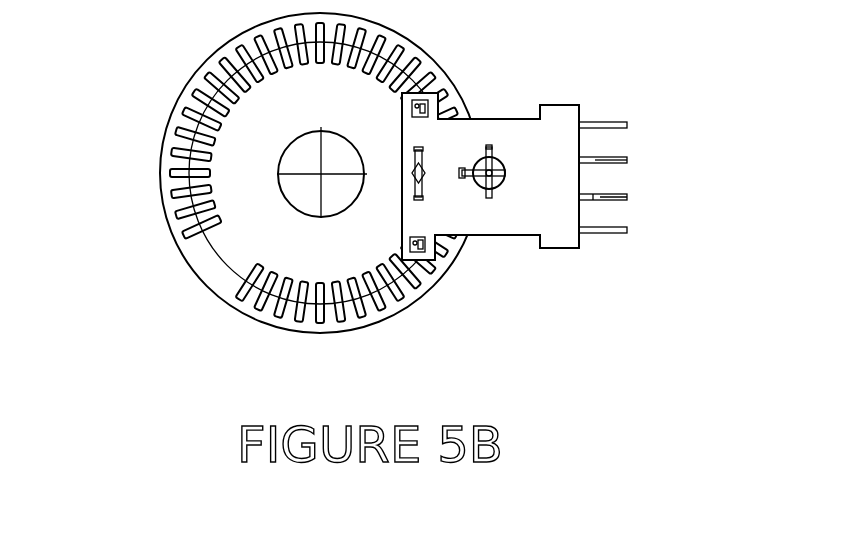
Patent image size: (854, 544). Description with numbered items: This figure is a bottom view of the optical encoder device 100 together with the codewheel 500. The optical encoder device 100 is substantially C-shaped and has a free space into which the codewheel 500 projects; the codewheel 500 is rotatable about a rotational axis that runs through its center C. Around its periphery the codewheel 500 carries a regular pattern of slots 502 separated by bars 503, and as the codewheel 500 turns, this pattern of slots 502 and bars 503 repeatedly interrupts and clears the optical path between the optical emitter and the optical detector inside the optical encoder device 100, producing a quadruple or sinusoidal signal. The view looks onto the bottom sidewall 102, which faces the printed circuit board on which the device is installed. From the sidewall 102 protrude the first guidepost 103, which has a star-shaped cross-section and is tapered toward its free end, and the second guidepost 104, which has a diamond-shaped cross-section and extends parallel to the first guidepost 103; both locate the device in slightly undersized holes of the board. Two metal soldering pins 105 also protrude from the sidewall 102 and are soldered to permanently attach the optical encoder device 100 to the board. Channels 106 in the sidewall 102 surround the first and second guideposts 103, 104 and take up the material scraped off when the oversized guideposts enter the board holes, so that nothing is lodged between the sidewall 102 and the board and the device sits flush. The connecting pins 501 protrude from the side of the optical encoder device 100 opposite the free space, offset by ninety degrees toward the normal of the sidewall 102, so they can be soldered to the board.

The codewheel 500 is at (278, 181).
The connecting pins 501 is at (627, 125).
The slots 502 is at (170, 188).
The bars 503 is at (227, 305).
The optical encoder device 100 is at (494, 153).
The bottom sidewall 102 is at (565, 157).
The first guidepost 103 is at (495, 188).
The second guidepost 104 is at (424, 189).
The soldering pins 105 is at (437, 96).
The channels 106 is at (416, 150).
The center C is at (315, 168).